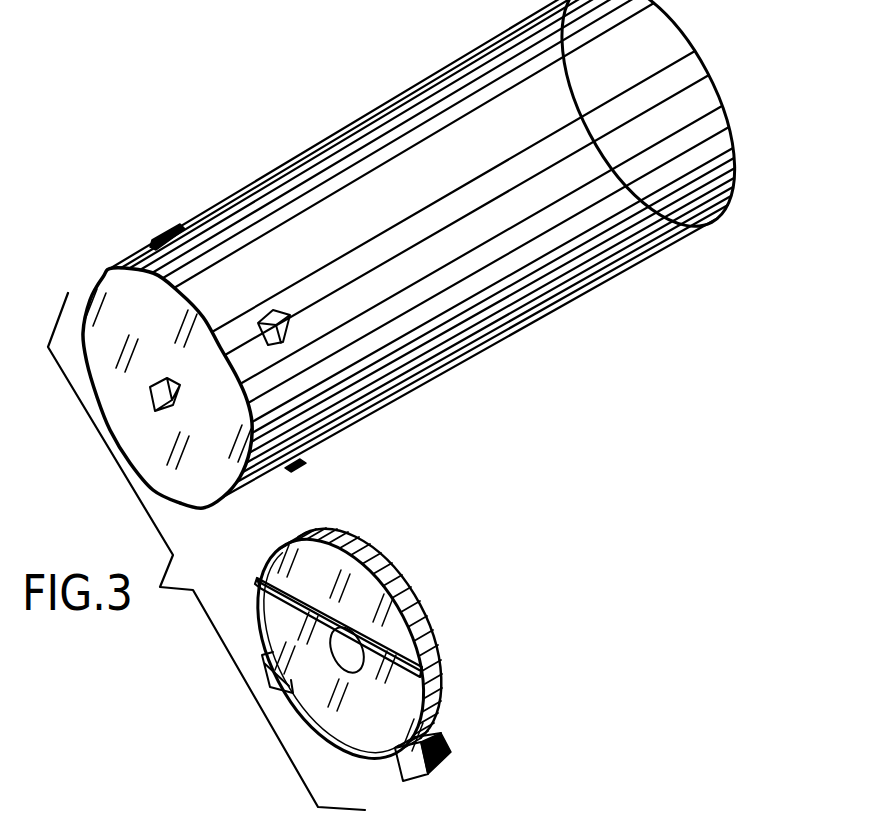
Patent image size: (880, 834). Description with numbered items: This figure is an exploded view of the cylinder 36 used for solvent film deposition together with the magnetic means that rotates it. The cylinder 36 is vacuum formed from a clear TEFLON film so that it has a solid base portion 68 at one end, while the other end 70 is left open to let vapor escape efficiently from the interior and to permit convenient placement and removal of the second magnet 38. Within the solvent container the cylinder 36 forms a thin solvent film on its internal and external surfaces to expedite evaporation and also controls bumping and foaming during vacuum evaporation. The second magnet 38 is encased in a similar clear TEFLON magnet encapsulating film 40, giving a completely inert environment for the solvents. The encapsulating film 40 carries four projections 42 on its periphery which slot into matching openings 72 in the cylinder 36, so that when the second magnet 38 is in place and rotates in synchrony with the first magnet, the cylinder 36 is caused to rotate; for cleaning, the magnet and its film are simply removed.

The cylinder 36 is at (360, 120).
The other end 70 is at (712, 82).
The openings 72 is at (163, 238).
The solid base portion 68 is at (217, 487).
The second magnet 38 is at (381, 568).
The magnet encapsulating film 40 is at (262, 590).
The projections 42 is at (450, 742).